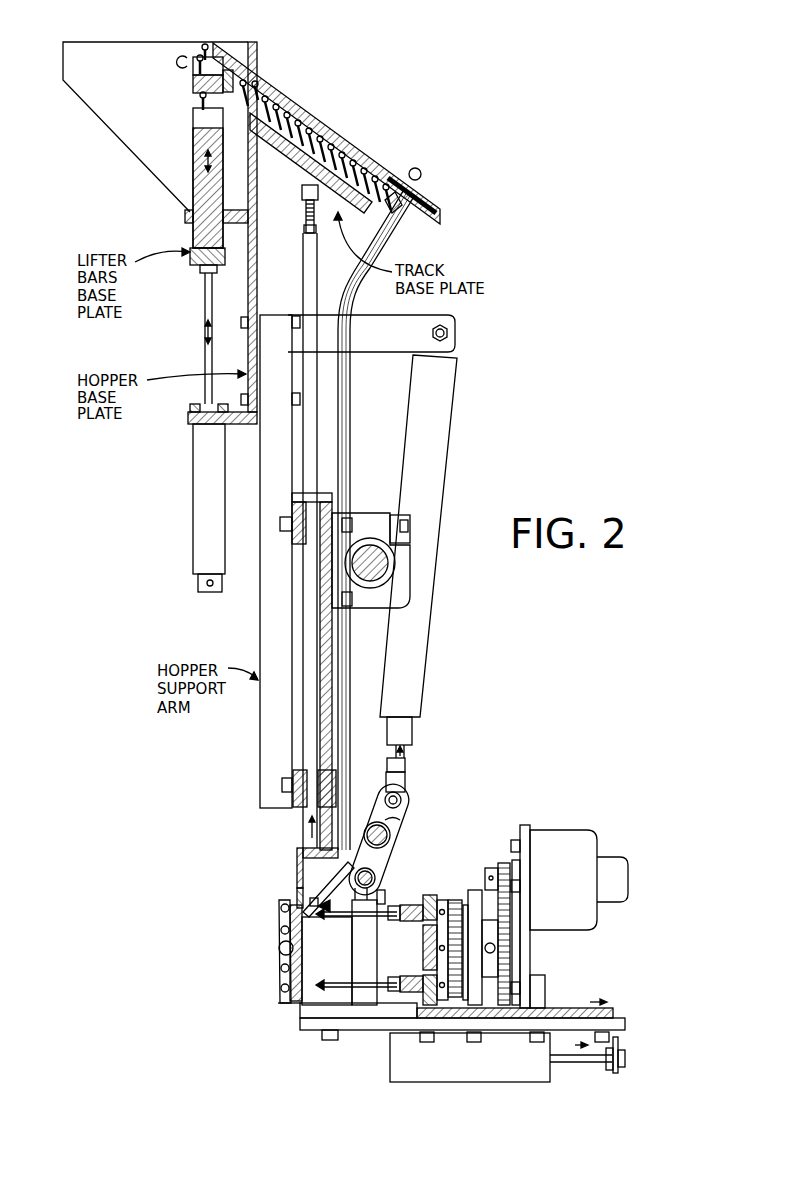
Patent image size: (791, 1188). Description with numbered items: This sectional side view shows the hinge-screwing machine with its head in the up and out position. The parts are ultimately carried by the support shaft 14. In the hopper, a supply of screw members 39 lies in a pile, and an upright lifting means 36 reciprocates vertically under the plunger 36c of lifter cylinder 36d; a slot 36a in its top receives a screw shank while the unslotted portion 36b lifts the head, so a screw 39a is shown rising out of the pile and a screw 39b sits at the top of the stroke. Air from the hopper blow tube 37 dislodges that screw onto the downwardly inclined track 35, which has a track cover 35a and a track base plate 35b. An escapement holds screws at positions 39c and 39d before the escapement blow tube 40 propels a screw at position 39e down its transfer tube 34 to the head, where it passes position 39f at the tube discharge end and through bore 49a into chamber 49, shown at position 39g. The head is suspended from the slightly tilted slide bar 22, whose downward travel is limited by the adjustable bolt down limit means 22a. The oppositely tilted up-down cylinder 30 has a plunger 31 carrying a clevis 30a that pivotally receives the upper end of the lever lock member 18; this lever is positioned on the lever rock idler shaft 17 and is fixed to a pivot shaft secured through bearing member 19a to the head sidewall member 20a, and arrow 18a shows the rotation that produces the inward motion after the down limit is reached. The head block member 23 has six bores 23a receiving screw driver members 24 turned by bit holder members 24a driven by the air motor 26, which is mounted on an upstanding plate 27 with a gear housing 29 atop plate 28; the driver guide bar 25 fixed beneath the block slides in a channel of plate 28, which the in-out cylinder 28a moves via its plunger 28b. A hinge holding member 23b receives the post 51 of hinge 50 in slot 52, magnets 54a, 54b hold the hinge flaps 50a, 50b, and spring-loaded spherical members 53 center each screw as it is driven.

The support shaft 14 is at (392, 566).
The lever rock idler shaft 17 is at (388, 836).
The lever lock member 18 is at (407, 812).
The arrow 18a is at (398, 820).
The bearing member 19a is at (374, 878).
The head sidewall member 20a is at (378, 962).
The slide bar 22 is at (305, 672).
The down limit means 22a is at (305, 240).
The head block member 23 is at (340, 960).
The bores 23a is at (348, 913).
The hinge holding member 23b is at (300, 1010).
The screw driver member 24 is at (405, 948).
The bit holder member 24a is at (410, 905).
The driver guide bar 25 is at (626, 1024).
The air motor 26 is at (600, 832).
The upstanding plate 27 is at (531, 955).
The plate 28 is at (548, 1008).
The in-out cylinder 28a is at (545, 1082).
The plunger 28b is at (578, 1068).
The gear housing 29 is at (475, 888).
The up-down cylinder 30 is at (418, 706).
The clevis 30a is at (392, 782).
The plunger 31 is at (412, 740).
The transfer tubes 34 is at (352, 440).
The tracks 35 is at (232, 94).
The track cover 35a is at (327, 132).
The track base plate 35b is at (300, 175).
The lifting means 36 is at (192, 80).
The slot 36a is at (197, 113).
The unslotted portion 36b is at (193, 58).
The plunger 36c is at (205, 350).
The lifter cylinder 36d is at (192, 518).
The hopper blow tube 37 is at (175, 62).
The screw members 39 is at (125, 134).
The screw 39a is at (203, 96).
The screw 39b is at (206, 44).
The screw 39c is at (400, 180).
The screw 39d is at (422, 176).
The screw 39e is at (395, 215).
The screw 39f is at (335, 848).
The screw 39g is at (300, 893).
The escapement blow tube 40 is at (418, 168).
The chamber 49 is at (320, 921).
The bore 49a is at (330, 890).
The hinge 50 is at (336, 640).
The hinge flap 50a is at (279, 908).
The hinge flap 50b is at (280, 986).
The post 51 is at (279, 948).
The slot 52 is at (280, 958).
The spherical members 53 is at (284, 995).
The magnet 54a is at (283, 930).
The magnet 54b is at (280, 970).